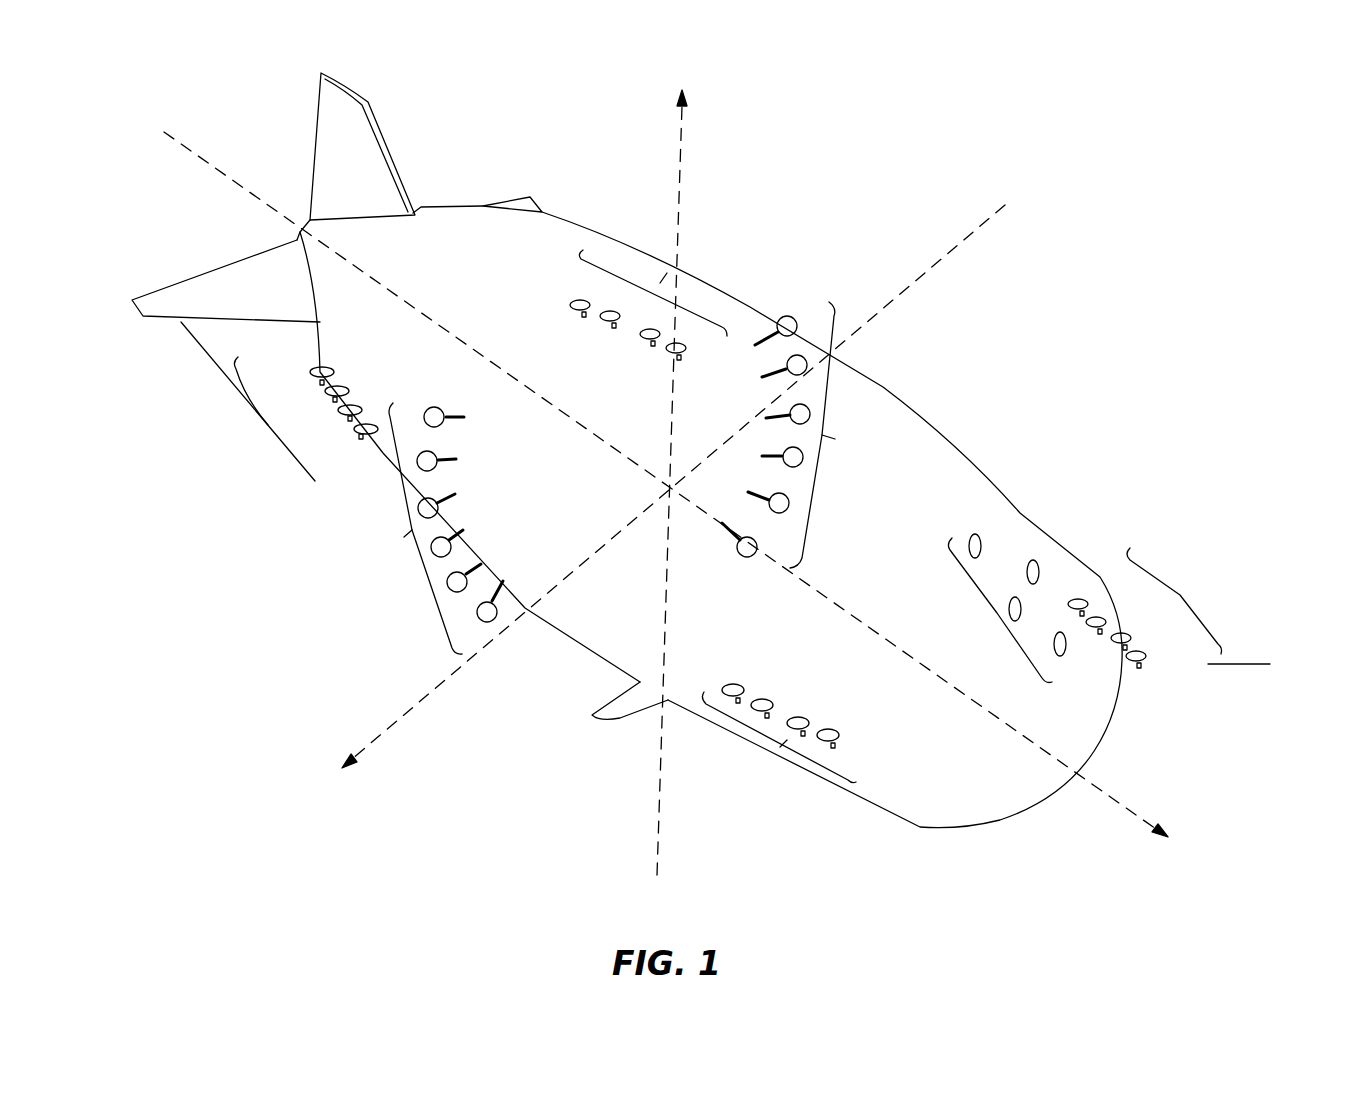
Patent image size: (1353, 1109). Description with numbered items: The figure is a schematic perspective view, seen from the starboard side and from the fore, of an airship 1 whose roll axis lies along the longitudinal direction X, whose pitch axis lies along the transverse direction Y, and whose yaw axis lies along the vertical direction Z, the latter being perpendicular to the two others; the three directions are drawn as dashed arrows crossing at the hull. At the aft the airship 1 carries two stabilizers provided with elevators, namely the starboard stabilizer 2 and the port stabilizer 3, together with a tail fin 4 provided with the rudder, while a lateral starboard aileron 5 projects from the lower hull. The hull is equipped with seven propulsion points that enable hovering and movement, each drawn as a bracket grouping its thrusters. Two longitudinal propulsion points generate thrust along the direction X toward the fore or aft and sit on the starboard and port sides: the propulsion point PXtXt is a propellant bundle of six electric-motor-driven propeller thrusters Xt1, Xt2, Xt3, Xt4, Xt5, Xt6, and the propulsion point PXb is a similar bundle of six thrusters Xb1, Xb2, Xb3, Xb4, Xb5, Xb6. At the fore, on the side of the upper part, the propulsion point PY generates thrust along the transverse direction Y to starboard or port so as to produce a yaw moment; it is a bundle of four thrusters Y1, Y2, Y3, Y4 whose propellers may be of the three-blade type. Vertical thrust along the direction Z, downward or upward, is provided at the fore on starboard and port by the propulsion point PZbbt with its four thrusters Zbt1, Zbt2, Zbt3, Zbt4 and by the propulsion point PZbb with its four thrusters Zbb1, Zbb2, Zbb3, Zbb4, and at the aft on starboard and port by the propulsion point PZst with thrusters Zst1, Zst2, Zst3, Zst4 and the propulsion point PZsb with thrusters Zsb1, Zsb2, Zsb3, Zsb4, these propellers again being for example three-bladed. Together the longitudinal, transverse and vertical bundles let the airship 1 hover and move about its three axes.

The airship 1 is at (185, 780).
The starboard stabilizer 2 is at (240, 283).
The port stabilizer 3 is at (533, 204).
The tail fin 4 is at (335, 167).
The starboard aileron 5 is at (633, 707).
The longitudinal direction X is at (1144, 817).
The transverse direction Y is at (447, 675).
The vertical direction Z is at (683, 127).
The propulsion point PZsb is at (662, 282).
The thruster Zsb1 is at (584, 294).
The thruster Zsb2 is at (621, 309).
The thruster Zsb3 is at (656, 326).
The thruster Zsb4 is at (689, 342).
The propulsion point PXb is at (823, 436).
The thruster Xb1 is at (758, 341).
The thruster Xb2 is at (763, 371).
The thruster Xb3 is at (763, 416).
The thruster Xb4 is at (756, 455).
The thruster Xb5 is at (746, 493).
The thruster Xb6 is at (722, 530).
The propulsion point PY is at (997, 613).
The thruster Y1 is at (993, 546).
The thruster Y2 is at (1017, 573).
The thruster Y3 is at (1030, 610).
The thruster Y4 is at (1044, 644).
The propulsion point PZbb is at (1182, 593).
The thruster Zbb1 is at (1102, 596).
The thruster Zbb2 is at (1124, 618).
The thruster Zbb3 is at (1149, 637).
The thruster Zbb4 is at (1165, 659).
The propulsion point PZbbt is at (780, 747).
The thruster Zbt1 is at (753, 683).
The thruster Zbt2 is at (788, 701).
The thruster Zbt3 is at (826, 718).
The thruster Zbt4 is at (856, 735).
The propulsion point PZst is at (268, 424).
The thruster Zst1 is at (295, 372).
The thruster Zst2 is at (310, 398).
The thruster Zst3 is at (324, 418).
The thruster Zst4 is at (347, 440).
The propulsion point PXtXt is at (412, 530).
The thruster Xt1 is at (463, 419).
The thruster Xt2 is at (456, 459).
The thruster Xt3 is at (460, 501).
The thruster Xt4 is at (468, 534).
The thruster Xt5 is at (487, 565).
The thruster Xt6 is at (514, 589).